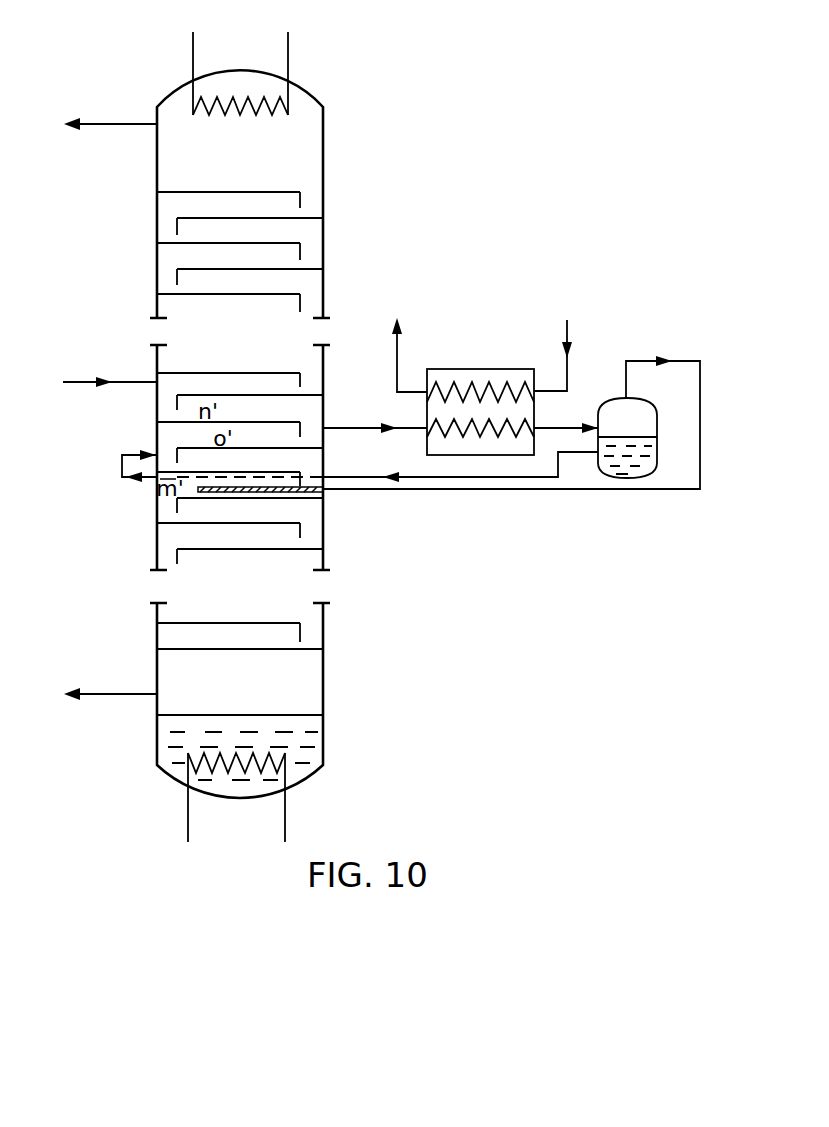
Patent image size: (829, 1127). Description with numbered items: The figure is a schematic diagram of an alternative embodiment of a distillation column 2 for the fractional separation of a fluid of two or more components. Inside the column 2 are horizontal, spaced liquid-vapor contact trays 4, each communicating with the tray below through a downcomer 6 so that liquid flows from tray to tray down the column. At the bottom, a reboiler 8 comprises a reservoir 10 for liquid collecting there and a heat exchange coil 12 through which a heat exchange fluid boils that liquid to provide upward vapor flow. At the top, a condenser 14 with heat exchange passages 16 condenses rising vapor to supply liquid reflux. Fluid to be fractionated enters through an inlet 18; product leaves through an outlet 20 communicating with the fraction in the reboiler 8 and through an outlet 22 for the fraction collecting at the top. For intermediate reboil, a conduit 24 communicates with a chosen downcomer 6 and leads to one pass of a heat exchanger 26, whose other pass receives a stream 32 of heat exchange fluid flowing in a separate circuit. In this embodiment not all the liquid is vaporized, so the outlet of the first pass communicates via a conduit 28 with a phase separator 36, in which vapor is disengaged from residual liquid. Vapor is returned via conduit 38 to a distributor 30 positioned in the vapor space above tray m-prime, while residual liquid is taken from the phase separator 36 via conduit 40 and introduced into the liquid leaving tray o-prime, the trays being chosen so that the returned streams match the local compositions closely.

The distillation column 2 is at (120, 514).
The liquid-vapor contact trays 4 is at (195, 226).
The downcomer 6 is at (308, 248).
The reboiler 8 is at (318, 786).
The reservoir 10 is at (182, 740).
The heat exchange coil 12 is at (228, 770).
The condenser 14 is at (338, 99).
The heat exchange passages 16 is at (233, 100).
The inlet 18 is at (85, 378).
The outlet 20 is at (95, 698).
The outlet 22 is at (103, 118).
The conduit 24 is at (345, 427).
The heat exchanger 26 is at (473, 369).
The second conduit 28 is at (567, 426).
The distributor 30 is at (272, 494).
The stream of heat exchange fluid 32 is at (569, 330).
The phase separator 36 is at (616, 429).
The conduit 38 is at (512, 490).
The conduit 40 is at (121, 467).